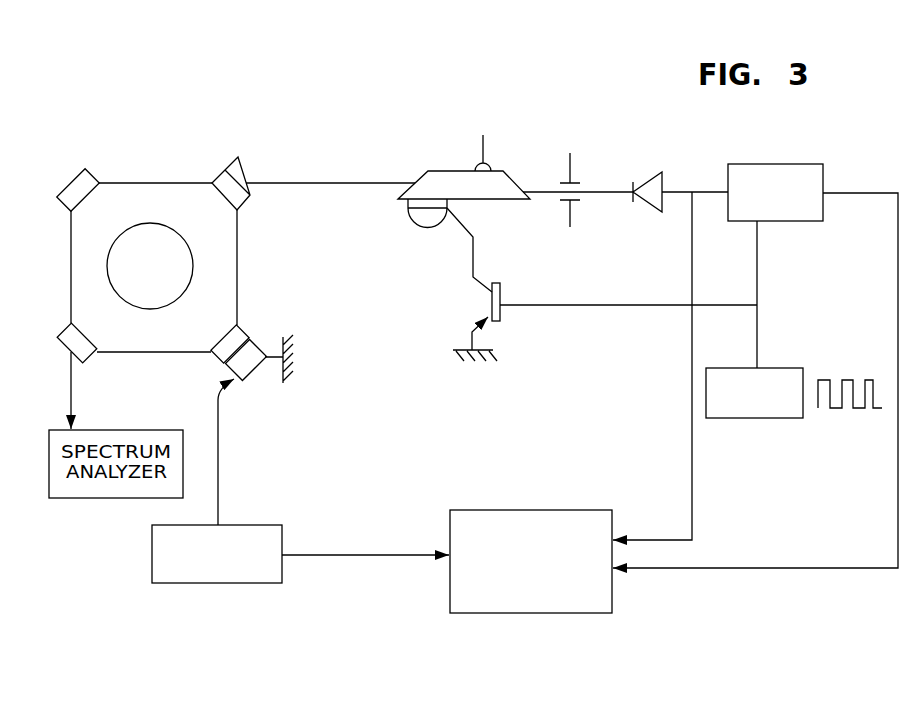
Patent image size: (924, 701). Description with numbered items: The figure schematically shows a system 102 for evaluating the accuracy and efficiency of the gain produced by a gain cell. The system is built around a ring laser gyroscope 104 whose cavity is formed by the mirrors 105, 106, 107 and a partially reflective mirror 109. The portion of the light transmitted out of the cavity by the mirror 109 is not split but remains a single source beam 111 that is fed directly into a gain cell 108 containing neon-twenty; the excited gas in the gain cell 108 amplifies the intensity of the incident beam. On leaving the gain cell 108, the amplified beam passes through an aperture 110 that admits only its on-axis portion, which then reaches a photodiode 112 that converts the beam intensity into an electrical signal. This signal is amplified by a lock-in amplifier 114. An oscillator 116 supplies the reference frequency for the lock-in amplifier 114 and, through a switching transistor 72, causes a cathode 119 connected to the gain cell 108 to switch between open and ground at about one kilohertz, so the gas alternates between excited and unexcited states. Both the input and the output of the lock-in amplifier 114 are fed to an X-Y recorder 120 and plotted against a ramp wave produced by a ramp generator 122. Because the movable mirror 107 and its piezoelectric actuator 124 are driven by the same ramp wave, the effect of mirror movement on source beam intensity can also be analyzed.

The potentiometer 72 is at (522, 323).
The system 102 is at (335, 143).
The ring laser gyroscope 104 is at (175, 162).
The mirror 105 is at (83, 170).
The mirror 106 is at (82, 364).
The movable mirror 107 is at (245, 330).
The gain cell 108 is at (447, 170).
The partially reflective mirror 109 is at (238, 197).
The aperture 110 is at (563, 165).
The source beam 111 is at (380, 180).
The photodiode 112 is at (663, 182).
The lock-in amplifier 114 is at (793, 222).
The oscillator 116 is at (735, 418).
The cathode 119 is at (432, 228).
The X-Y recorder 120 is at (450, 522).
The ramp generator 122 is at (152, 545).
The piezoelectric actuator 124 is at (255, 384).